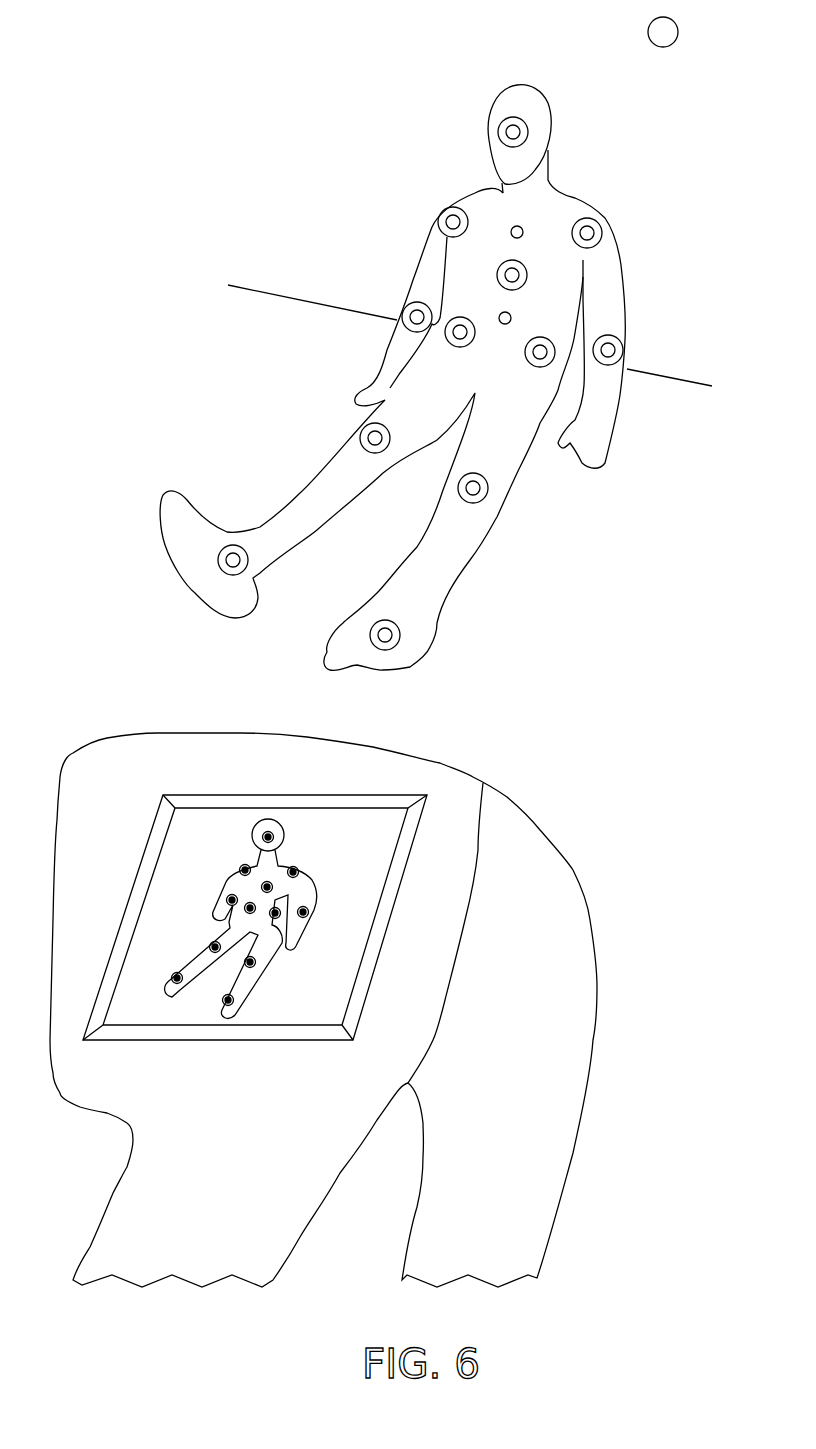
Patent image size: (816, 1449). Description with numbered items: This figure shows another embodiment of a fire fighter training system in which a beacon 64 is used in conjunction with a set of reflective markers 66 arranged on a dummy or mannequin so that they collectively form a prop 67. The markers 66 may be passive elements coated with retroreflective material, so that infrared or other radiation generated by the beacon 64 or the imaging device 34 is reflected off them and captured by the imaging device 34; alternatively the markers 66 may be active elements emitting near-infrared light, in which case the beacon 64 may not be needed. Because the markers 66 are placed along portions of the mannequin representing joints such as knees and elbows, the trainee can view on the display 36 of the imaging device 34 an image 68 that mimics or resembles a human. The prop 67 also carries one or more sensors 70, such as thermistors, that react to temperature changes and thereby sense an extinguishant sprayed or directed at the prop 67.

The imaging device 34 is at (467, 800).
The display 36 is at (338, 825).
The beacon 64 is at (678, 32).
The reflective markers 66 is at (520, 132).
The prop 67 is at (503, 462).
The image 68 is at (322, 884).
The sensors 70 is at (517, 227).